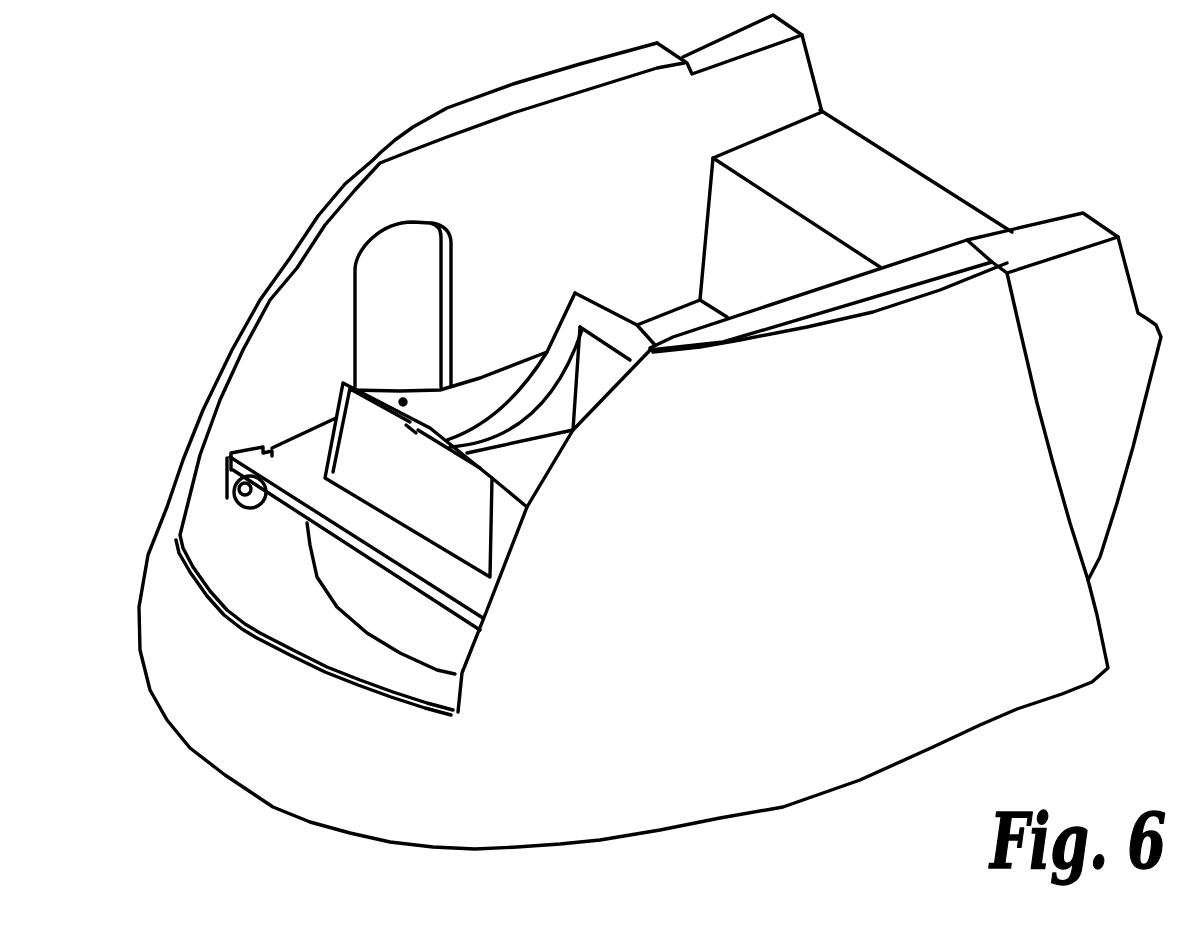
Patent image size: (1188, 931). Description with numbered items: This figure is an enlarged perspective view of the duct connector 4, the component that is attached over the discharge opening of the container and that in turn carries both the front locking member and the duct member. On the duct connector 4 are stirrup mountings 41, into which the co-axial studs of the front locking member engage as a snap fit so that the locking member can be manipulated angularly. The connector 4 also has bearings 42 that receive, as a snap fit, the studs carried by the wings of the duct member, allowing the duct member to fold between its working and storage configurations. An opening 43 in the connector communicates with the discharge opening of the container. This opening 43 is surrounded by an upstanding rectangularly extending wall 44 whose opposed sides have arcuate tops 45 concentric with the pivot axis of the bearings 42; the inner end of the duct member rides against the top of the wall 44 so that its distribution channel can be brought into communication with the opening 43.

The duct connector 4 is at (928, 163).
The stirrup mountings 41 is at (228, 500).
The bearings 42 is at (377, 257).
The opening 43 is at (537, 466).
The upstanding rectangularly extending wall 44 is at (603, 318).
The arcuate tops 45 is at (550, 367).